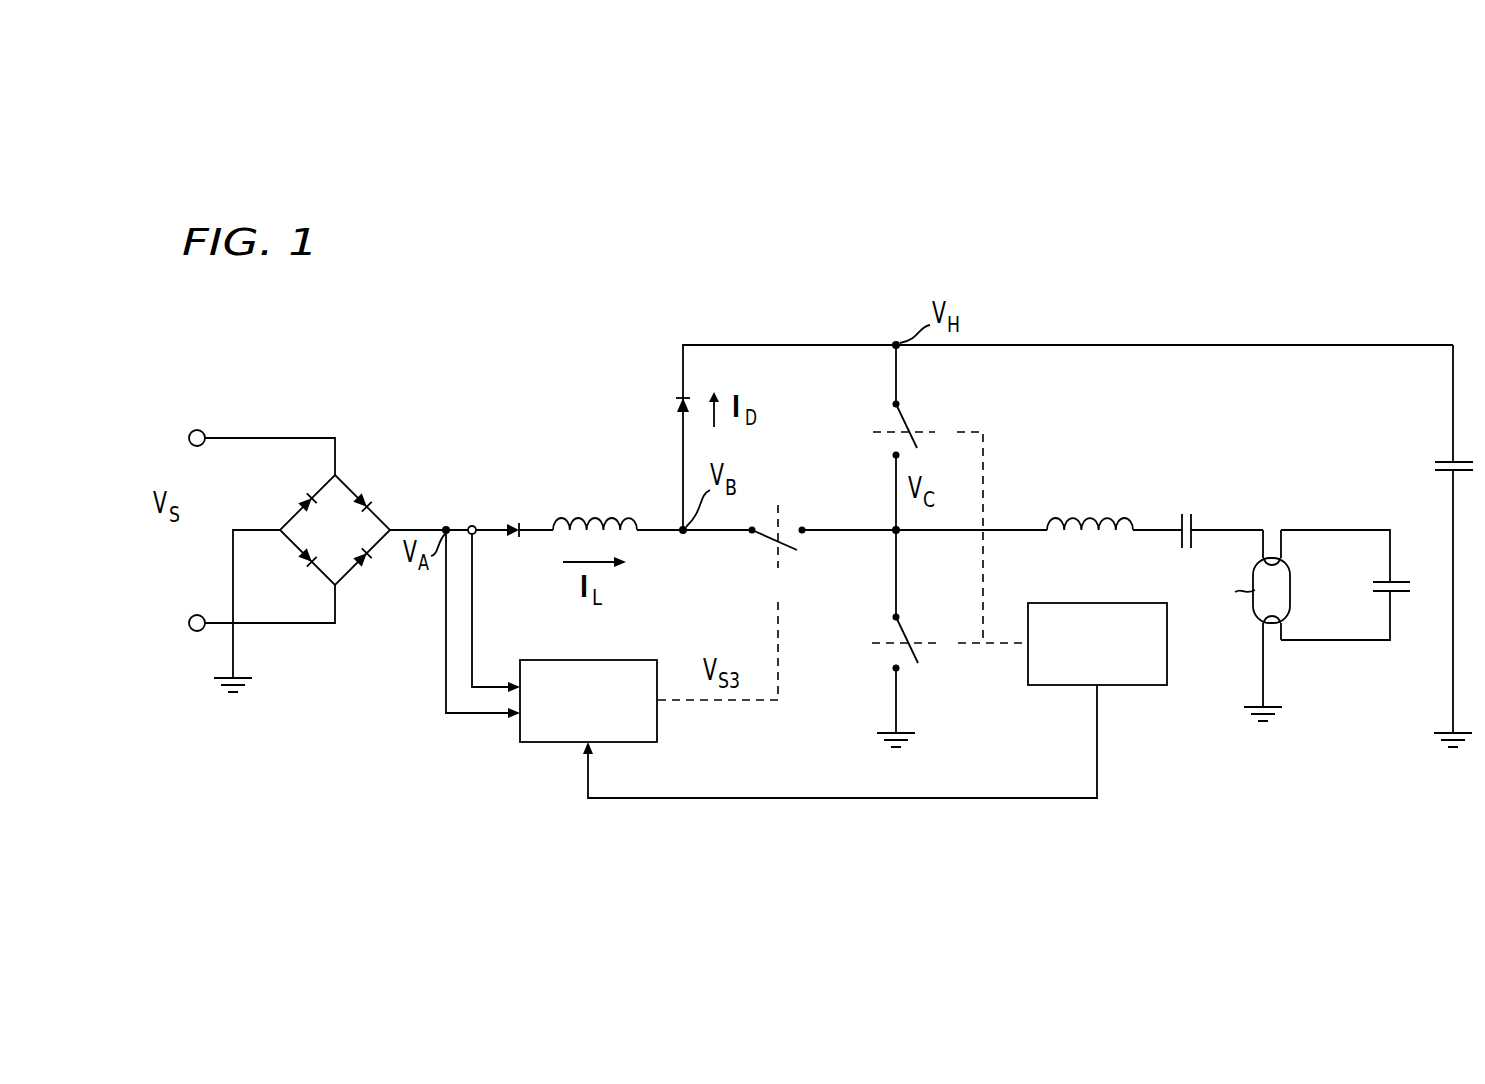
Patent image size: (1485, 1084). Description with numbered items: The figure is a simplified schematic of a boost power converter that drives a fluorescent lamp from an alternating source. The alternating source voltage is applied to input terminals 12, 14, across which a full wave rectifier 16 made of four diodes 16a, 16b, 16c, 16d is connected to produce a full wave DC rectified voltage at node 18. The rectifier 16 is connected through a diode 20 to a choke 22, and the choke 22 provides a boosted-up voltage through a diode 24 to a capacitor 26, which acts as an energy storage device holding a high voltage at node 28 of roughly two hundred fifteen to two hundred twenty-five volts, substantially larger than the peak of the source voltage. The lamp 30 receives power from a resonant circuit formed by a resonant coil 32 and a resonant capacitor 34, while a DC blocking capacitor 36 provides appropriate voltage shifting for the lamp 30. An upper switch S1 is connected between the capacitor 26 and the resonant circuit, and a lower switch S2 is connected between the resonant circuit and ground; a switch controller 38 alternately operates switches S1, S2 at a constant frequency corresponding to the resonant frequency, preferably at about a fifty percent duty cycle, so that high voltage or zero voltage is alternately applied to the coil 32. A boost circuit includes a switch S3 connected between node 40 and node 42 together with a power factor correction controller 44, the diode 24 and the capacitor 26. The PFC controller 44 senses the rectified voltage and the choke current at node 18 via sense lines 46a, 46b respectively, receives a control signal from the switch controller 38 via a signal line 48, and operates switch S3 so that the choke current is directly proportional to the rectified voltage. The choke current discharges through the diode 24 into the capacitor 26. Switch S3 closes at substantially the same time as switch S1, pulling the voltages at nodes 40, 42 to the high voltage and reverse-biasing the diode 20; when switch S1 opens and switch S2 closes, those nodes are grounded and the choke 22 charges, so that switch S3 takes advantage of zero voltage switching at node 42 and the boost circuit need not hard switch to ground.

The input terminal 12 is at (197, 428).
The input terminal 14 is at (197, 613).
The full wave rectifier 16 is at (346, 541).
The diode 16a is at (303, 496).
The diode 16b is at (367, 496).
The diode 16c is at (374, 565).
The diode 16d is at (303, 563).
The node 18 is at (446, 525).
The diode 20 is at (523, 522).
The choke 22 is at (612, 515).
The diode 24 is at (676, 405).
The capacitor 26 is at (1435, 466).
The node 28 is at (896, 342).
The lamp 30 is at (1291, 580).
The resonant coil 32 is at (1090, 515).
The resonant capacitor 34 is at (1373, 586).
The DC blocking capacitor 36 is at (1187, 512).
The switch controller 38 is at (1045, 688).
The node 40 is at (683, 534).
The node 42 is at (893, 533).
The power factor correction controller 44 is at (537, 744).
The sense line 46a is at (446, 692).
The sense line 46b is at (473, 623).
The signal line 48 is at (810, 796).
The upper switch S1 is at (910, 420).
The lower switch S2 is at (908, 632).
The switch S3 is at (798, 527).